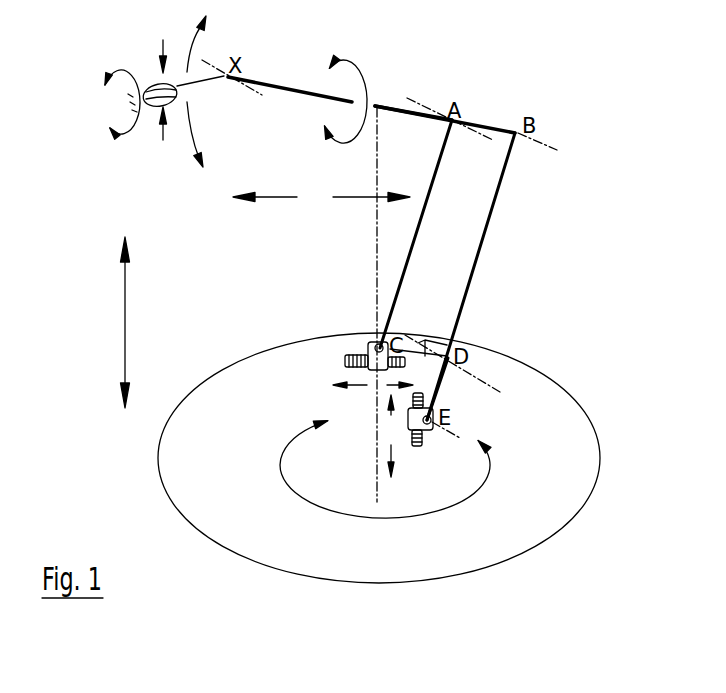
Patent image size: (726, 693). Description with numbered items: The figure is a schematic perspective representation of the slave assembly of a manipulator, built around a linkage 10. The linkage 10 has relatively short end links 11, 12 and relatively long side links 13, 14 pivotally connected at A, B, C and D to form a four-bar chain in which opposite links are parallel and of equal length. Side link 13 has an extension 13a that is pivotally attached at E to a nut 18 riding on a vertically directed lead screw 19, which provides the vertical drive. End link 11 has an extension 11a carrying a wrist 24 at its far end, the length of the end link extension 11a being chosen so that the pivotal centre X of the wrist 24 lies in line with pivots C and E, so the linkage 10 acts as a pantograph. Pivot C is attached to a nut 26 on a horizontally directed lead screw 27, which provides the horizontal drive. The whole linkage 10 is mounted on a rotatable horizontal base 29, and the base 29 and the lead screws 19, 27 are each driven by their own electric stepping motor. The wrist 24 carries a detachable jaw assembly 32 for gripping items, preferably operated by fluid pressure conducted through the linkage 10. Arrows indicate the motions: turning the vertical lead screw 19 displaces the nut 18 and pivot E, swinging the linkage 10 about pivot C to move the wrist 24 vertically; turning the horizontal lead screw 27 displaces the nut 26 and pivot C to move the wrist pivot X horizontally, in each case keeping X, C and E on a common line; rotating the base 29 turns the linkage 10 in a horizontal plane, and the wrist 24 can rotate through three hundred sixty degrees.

The linkage 10 is at (508, 93).
The end link 11 is at (460, 117).
The end link extension 11a is at (407, 83).
The end link 12 is at (425, 352).
The side link 13 is at (497, 192).
The side link extension 13a is at (440, 382).
The side link 14 is at (432, 163).
The nut 18 is at (408, 422).
The vertically directed lead screw 19 is at (414, 447).
The wrist 24 is at (225, 70).
The nut 26 is at (372, 346).
The horizontally directed lead screw 27 is at (345, 360).
The rotatable horizontal base 29 is at (573, 496).
The jaw assembly 32 is at (148, 81).